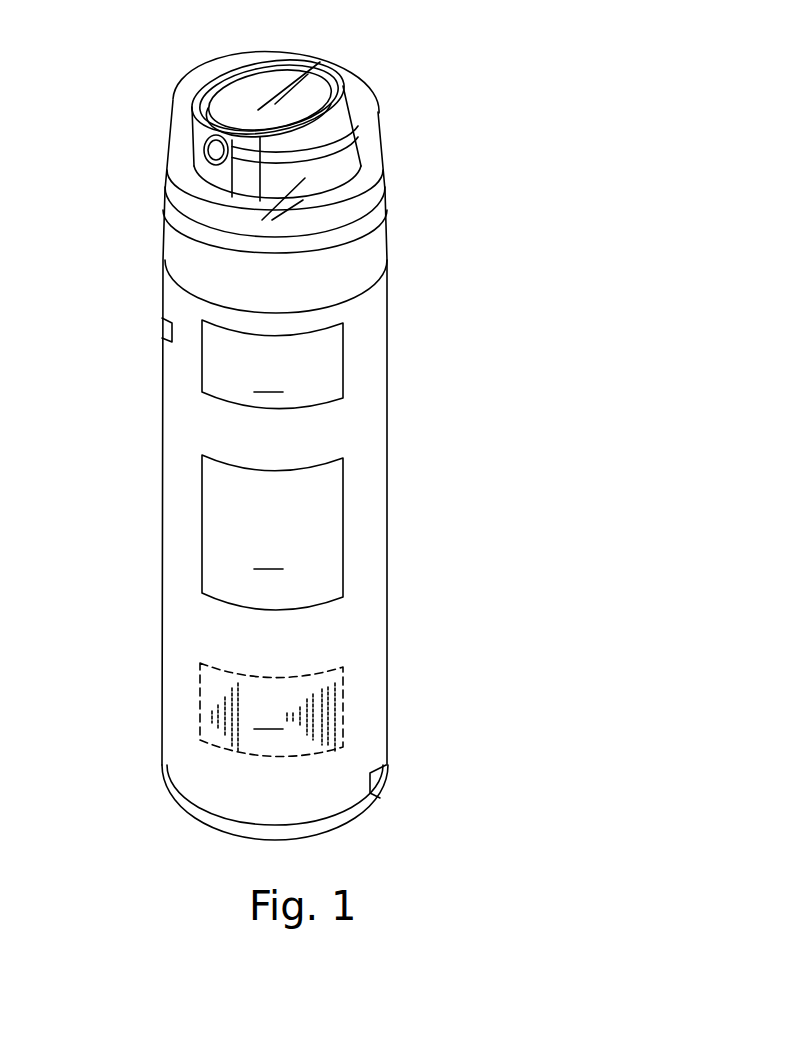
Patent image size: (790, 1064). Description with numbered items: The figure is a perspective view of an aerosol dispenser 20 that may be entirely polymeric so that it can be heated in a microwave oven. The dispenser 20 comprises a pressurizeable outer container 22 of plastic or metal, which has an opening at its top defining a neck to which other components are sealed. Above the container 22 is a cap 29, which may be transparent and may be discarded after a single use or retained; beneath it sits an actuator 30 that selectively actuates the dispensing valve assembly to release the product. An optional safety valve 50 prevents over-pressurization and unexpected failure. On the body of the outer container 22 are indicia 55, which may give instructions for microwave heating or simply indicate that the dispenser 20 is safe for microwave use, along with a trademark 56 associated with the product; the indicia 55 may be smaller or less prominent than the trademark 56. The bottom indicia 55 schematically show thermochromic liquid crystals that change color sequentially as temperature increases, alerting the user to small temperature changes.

The aerosol dispenser 20 is at (433, 375).
The pressurizeable outer container 22 is at (357, 608).
The cap 29 is at (352, 92).
The actuator 30 is at (293, 173).
The safety valve 50 is at (162, 333).
The indicia 55 is at (163, 217).
The trademark 56 is at (272, 532).